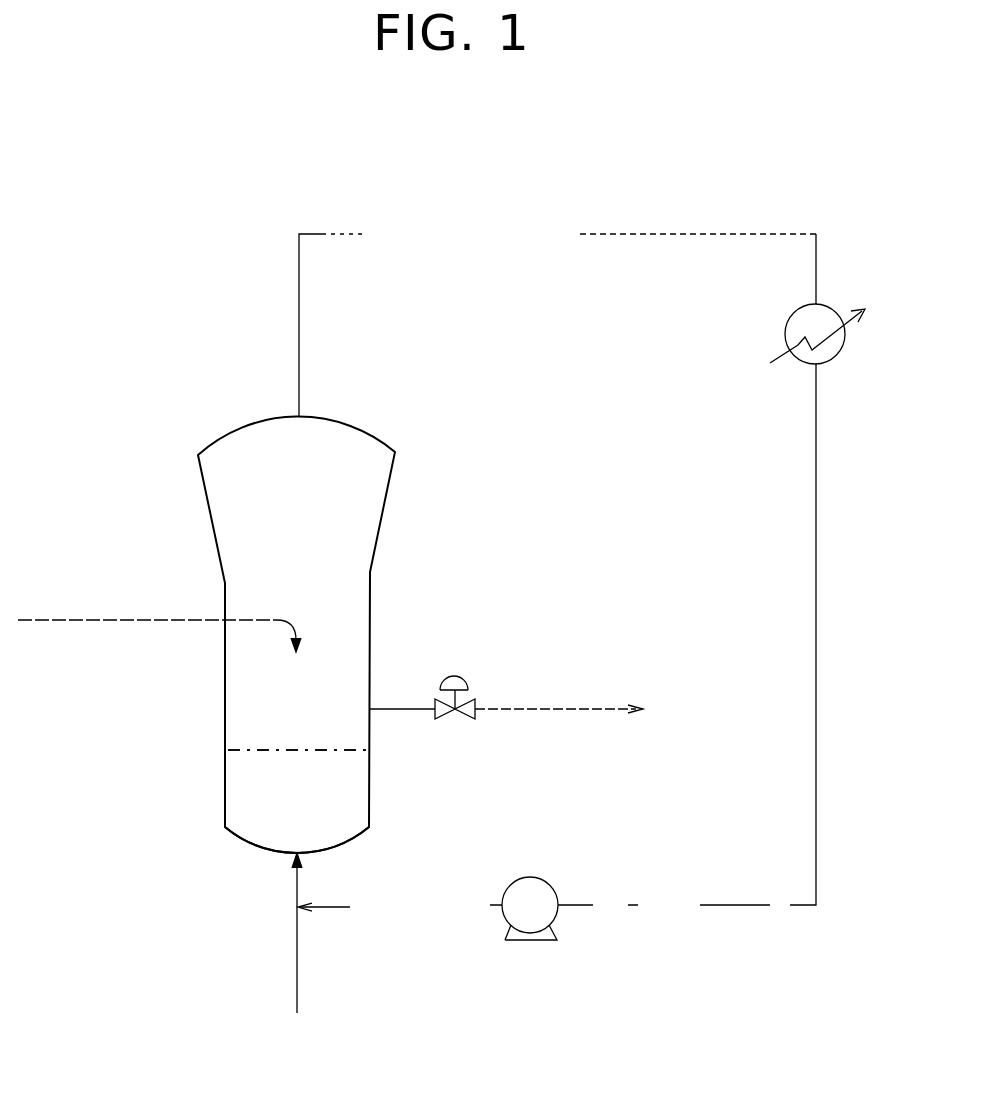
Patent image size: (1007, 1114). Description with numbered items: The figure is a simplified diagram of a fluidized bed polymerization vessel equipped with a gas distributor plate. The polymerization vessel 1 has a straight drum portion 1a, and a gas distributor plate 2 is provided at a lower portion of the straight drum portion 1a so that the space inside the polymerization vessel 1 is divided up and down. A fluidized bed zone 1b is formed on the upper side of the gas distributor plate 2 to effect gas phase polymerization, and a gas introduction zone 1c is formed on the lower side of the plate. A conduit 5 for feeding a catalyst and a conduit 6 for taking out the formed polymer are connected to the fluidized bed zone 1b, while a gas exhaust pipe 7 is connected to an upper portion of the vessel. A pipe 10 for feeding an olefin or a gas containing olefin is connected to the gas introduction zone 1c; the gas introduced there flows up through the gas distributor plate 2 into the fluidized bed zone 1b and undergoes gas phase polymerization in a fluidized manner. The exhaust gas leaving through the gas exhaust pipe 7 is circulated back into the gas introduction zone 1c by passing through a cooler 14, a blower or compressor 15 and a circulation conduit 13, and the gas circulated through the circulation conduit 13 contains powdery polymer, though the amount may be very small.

The polymerization vessel 1 is at (227, 433).
The straight drum portion 1a is at (222, 701).
The fluidized bed zone 1b is at (265, 698).
The gas introduction zone 1c is at (258, 789).
The gas distributor plate 2 is at (348, 751).
The conduit for feeding a catalyst 5 is at (140, 620).
The conduit for taking out the formed polymer 6 is at (515, 709).
The gas exhaust pipe 7 is at (683, 236).
The pipe for feeding an olefin or a gas containing olefin 10 is at (295, 966).
The circulation conduit 13 is at (818, 800).
The cooler 14 is at (836, 364).
The blower (or compressor) 15 is at (540, 877).